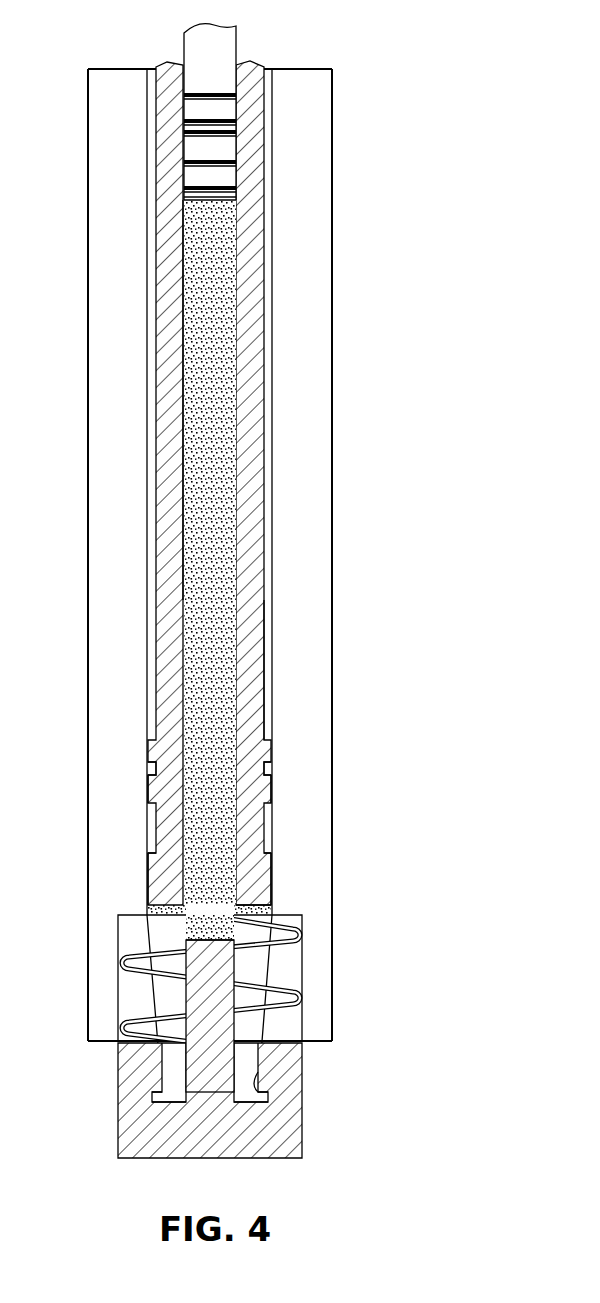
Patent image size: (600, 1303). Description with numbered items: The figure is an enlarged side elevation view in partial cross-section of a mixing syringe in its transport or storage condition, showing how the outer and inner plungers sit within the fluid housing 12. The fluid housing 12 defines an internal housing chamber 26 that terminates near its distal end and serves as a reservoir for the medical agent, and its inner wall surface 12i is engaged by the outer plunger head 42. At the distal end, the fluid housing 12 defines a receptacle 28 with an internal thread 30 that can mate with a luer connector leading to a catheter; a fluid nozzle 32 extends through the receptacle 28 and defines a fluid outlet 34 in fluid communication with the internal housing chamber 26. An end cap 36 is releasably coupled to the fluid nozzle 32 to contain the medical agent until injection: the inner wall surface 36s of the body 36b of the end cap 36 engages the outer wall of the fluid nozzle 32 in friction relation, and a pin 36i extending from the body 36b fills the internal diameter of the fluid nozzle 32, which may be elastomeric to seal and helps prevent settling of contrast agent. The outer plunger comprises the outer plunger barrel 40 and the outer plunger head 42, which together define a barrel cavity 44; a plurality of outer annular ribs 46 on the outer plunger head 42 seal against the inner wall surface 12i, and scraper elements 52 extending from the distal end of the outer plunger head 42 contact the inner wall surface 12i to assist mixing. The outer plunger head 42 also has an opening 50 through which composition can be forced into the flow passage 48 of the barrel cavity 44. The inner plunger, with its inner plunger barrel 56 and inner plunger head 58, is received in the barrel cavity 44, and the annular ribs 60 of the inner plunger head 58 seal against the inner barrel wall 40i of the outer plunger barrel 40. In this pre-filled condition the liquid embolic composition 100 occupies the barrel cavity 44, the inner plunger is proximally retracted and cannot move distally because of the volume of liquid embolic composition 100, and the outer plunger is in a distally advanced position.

The fluid housing 12 is at (332, 764).
The inner wall surface 12i is at (268, 700).
The internal housing chamber 26 is at (268, 670).
The receptacle 28 is at (285, 976).
The internal thread 30 is at (128, 960).
The fluid nozzle 32 is at (262, 1016).
The fluid outlet 34 is at (190, 1055).
The end cap 36 is at (224, 1055).
The body 36b is at (290, 1143).
The pin 36i is at (198, 997).
The inner wall surface 36s is at (267, 1093).
The outer plunger barrel 40 is at (163, 687).
The inner barrel wall 40i is at (237, 295).
The outer plunger head 42 is at (160, 816).
The barrel cavity 44 is at (215, 565).
The outer annular ribs 46 is at (148, 756).
The flow passage 48 is at (237, 884).
The opening 50 is at (153, 910).
The scraper elements 52 is at (268, 896).
The inner plunger barrel 56 is at (213, 58).
The inner plunger head 58 is at (250, 139).
The annular ribs 60 is at (197, 177).
The liquid embolic composition 100 is at (222, 380).